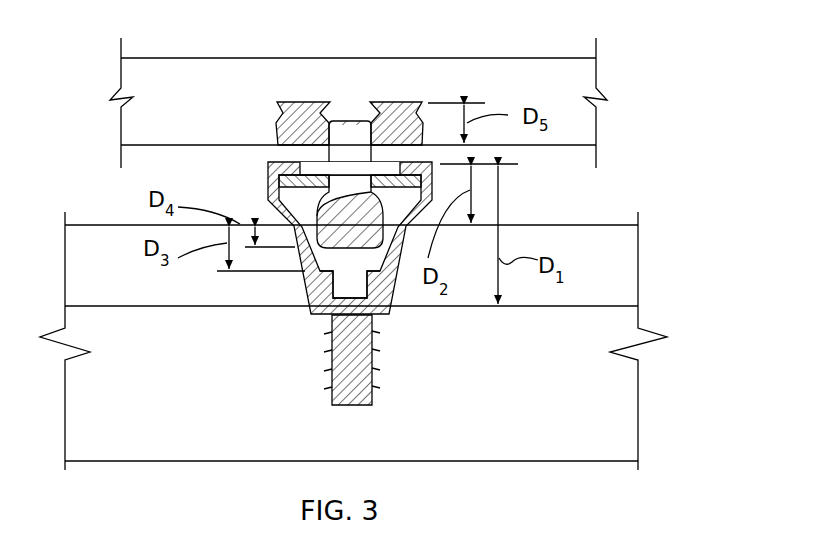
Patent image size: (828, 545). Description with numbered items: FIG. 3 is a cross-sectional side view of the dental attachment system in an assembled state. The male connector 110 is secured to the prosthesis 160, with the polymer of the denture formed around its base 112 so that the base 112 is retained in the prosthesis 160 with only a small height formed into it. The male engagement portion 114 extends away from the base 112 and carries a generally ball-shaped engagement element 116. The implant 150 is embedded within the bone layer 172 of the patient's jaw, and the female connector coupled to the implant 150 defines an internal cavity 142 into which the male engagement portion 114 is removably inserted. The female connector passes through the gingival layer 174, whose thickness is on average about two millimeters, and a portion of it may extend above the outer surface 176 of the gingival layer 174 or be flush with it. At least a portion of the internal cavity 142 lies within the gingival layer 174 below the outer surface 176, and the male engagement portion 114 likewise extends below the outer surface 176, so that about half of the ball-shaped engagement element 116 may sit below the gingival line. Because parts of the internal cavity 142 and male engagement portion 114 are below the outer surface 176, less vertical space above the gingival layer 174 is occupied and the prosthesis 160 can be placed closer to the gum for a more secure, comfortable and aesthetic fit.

The male connector 110 is at (311, 94).
The base 112 is at (402, 101).
The male engagement portion 114 is at (307, 162).
The ball-shaped engagement element 116 is at (277, 188).
The internal cavity 142 is at (313, 299).
The implant 150 is at (324, 379).
The prosthesis 160 is at (499, 54).
The bone layer 172 is at (625, 401).
The gingival layer 174 is at (625, 263).
The outer surface 176 is at (624, 222).